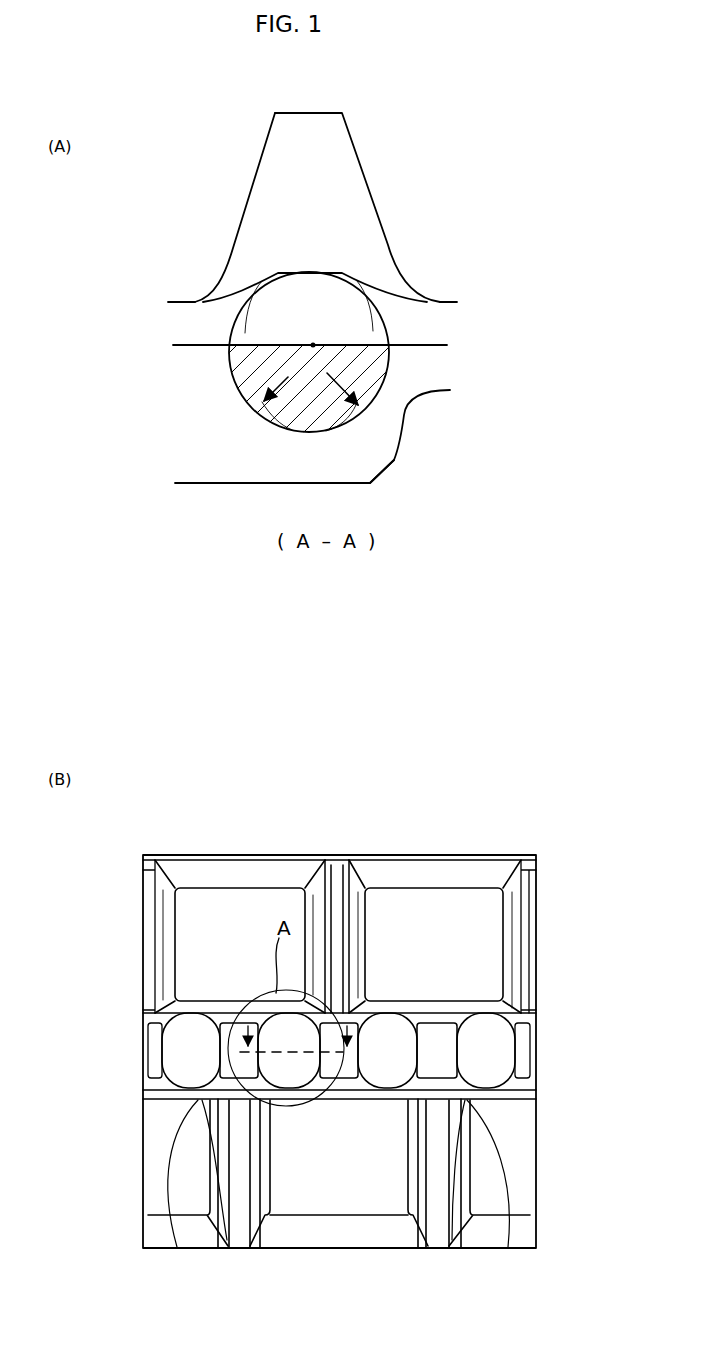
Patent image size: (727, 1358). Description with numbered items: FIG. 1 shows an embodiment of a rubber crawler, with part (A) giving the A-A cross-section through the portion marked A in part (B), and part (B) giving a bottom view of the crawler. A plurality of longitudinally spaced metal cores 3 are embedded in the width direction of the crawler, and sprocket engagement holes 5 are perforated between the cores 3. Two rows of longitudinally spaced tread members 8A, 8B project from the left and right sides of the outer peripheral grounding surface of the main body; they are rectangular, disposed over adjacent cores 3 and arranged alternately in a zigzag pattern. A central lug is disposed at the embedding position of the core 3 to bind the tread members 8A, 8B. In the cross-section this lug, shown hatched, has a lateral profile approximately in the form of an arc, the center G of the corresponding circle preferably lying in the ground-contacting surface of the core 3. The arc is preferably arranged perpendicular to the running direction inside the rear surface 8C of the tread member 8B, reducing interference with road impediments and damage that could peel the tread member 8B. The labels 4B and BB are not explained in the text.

The metal core 3 is at (348, 320).
The land portion 4B is at (332, 162).
The sprocket engagement hole 5 is at (430, 1055).
The tread member 8A is at (262, 897).
The tread member 8B is at (330, 1198).
The surface (rear surface) of the tread member 8C is at (407, 422).
The center of the circle G is at (314, 340).
The block base line BB is at (370, 450).